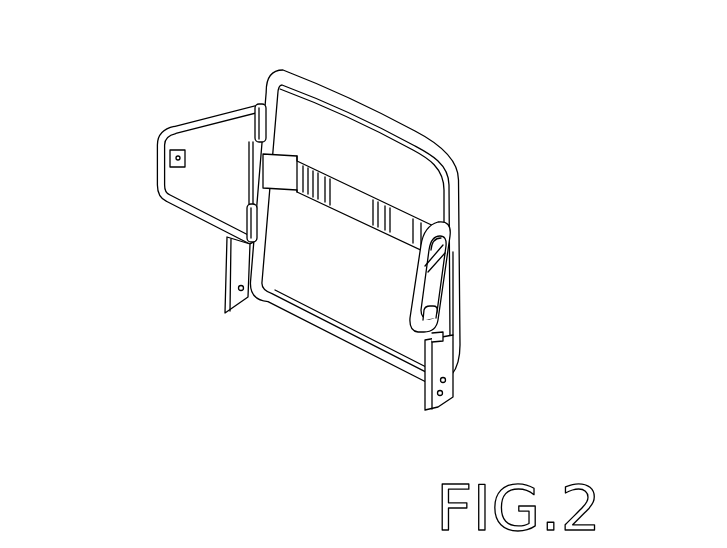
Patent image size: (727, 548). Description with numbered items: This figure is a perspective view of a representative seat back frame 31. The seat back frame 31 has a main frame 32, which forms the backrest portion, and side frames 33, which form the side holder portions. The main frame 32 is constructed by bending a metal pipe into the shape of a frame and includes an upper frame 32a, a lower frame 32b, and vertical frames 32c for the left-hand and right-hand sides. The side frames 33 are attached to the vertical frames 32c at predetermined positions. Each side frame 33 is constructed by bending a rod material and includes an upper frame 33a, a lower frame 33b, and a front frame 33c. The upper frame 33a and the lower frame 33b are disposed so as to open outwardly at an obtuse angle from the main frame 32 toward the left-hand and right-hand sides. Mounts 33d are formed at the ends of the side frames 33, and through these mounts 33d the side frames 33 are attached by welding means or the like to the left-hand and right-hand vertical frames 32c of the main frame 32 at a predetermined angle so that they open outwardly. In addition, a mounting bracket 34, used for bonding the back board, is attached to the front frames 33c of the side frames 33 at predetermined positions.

The seat back frame 31 is at (321, 231).
The main frame 32 is at (359, 203).
The upper frame 32a is at (361, 100).
The lower frame 32b is at (297, 312).
The vertical frames 32c is at (252, 183).
The side frames 33 is at (321, 231).
The upper frame 33a is at (221, 114).
The lower frame 33b is at (182, 208).
The front frame 33c is at (157, 140).
The mounts 33d is at (258, 103).
The mounting bracket 34 is at (187, 158).